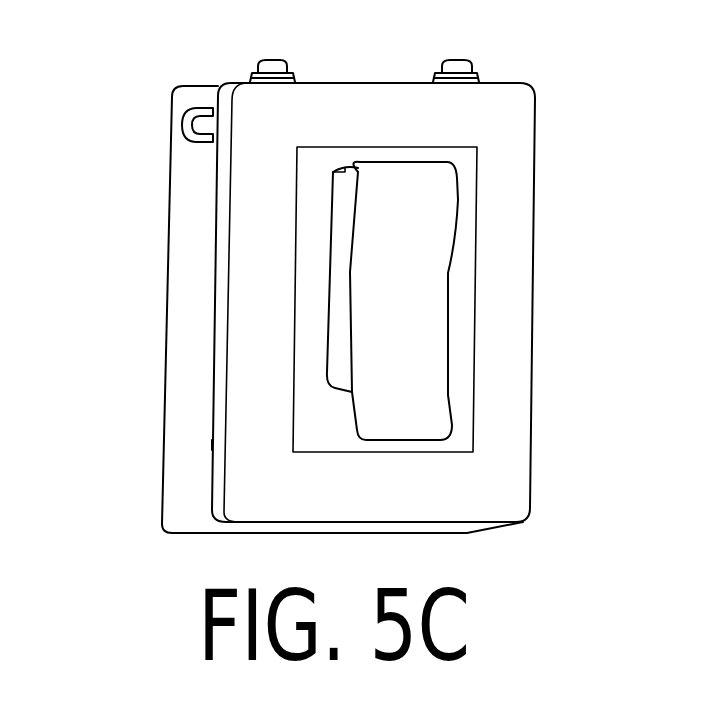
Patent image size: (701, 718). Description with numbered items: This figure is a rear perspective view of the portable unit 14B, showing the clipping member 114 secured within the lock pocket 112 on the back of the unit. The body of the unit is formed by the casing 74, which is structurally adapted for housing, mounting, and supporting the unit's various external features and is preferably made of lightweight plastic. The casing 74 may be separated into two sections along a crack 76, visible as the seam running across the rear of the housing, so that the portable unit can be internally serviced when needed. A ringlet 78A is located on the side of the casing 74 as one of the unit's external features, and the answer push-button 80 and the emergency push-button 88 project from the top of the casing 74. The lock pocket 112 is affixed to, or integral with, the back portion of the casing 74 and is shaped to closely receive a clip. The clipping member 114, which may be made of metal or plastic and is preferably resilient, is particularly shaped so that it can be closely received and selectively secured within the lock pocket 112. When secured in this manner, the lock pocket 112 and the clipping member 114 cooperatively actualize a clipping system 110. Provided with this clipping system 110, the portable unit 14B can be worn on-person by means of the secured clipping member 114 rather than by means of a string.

The portable unit 14B is at (148, 86).
The casing 74 is at (168, 274).
The crack 76 is at (211, 444).
The ringlet 78A is at (182, 127).
The answer push-button 80 is at (455, 58).
The emergency push-button 88 is at (270, 53).
The clipping system 110 is at (490, 288).
The lock pocket 112 is at (330, 402).
The clipping member 114 is at (410, 440).